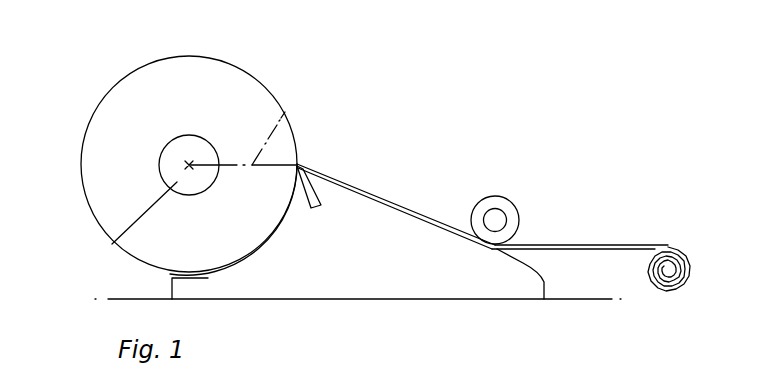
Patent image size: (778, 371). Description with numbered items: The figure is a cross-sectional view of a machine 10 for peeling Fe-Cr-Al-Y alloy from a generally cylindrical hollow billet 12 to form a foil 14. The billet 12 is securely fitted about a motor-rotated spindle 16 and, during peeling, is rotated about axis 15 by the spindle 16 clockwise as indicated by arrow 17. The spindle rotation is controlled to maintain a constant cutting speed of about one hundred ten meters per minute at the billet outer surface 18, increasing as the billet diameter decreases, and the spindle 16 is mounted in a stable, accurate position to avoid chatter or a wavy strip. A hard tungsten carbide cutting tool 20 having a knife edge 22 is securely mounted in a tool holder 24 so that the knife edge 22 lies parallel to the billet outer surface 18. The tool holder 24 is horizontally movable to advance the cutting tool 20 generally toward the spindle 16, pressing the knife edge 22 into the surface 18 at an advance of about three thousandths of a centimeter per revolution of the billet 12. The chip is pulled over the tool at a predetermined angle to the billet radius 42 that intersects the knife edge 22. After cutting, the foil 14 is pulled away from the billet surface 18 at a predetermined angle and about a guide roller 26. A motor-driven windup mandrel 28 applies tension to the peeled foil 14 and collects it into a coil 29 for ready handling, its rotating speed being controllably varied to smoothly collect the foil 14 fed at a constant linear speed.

The machine 10 is at (348, 301).
The billet 12 is at (242, 83).
The foil 14 is at (390, 200).
The axis 15 is at (194, 149).
The spindle 16 is at (114, 243).
The arrow 17 is at (143, 106).
The billet outer surface 18 is at (188, 55).
The cutting tool 20 is at (317, 195).
The knife edge 22 is at (297, 163).
The tool holder 24 is at (273, 275).
The guide roller 26 is at (505, 203).
The windup mandrel 28 is at (670, 273).
The coil 29 is at (663, 293).
The billet radius 42 is at (285, 112).